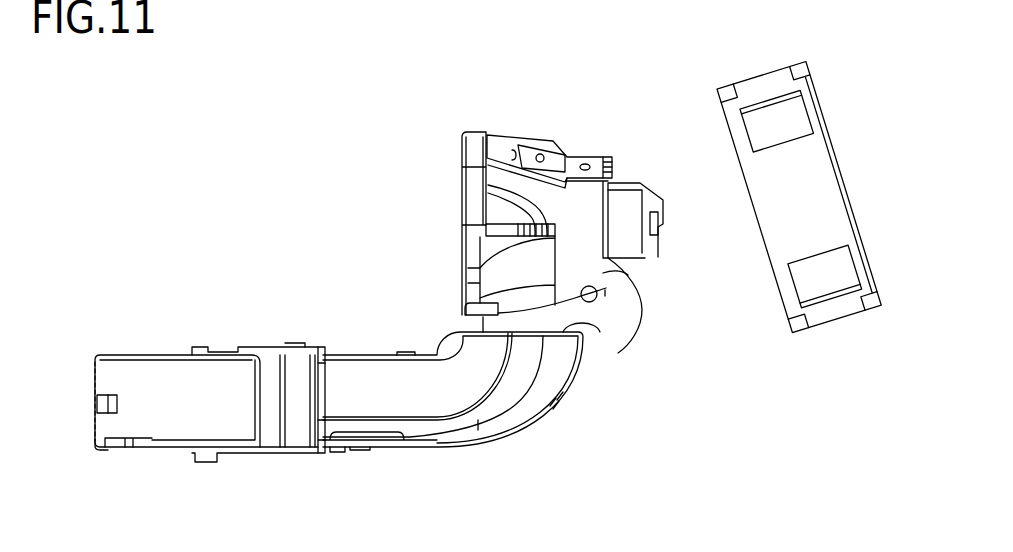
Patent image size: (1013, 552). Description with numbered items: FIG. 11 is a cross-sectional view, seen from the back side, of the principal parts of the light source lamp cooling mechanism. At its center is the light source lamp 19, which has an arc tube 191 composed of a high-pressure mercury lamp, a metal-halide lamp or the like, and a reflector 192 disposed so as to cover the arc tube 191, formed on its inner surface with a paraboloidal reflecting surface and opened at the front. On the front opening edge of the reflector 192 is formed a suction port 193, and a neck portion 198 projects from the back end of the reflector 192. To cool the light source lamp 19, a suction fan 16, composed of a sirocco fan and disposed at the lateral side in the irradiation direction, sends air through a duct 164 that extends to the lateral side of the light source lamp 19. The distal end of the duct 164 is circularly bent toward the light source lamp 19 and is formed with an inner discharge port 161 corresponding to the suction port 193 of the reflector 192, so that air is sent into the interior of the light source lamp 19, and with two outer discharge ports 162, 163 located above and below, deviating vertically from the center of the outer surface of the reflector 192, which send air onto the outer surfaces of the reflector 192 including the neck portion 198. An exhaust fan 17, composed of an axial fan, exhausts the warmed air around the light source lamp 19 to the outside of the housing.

The suction fan 16 is at (170, 355).
The exhaust fan 17 is at (832, 133).
The light source lamp 19 is at (547, 208).
The inner discharge port 161 is at (466, 322).
The outer discharge port 162 is at (654, 351).
The outer discharge port 163 is at (594, 326).
The duct 164 is at (442, 447).
The arc tube 191 is at (468, 250).
The reflector 192 is at (583, 254).
The suction port 193 is at (470, 290).
The neck portion 198 is at (637, 258).